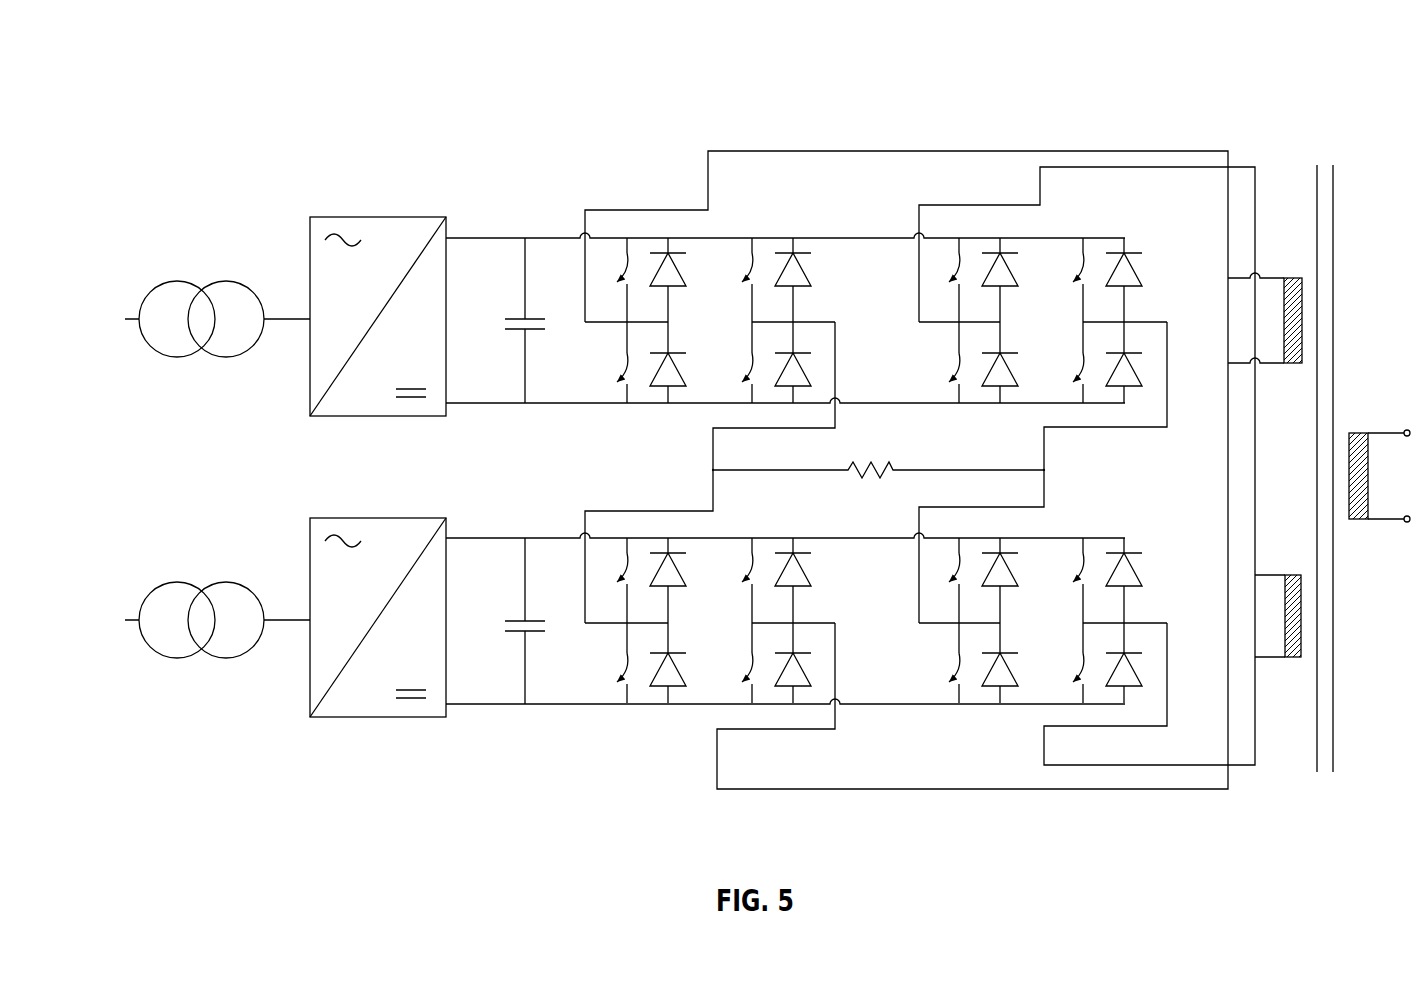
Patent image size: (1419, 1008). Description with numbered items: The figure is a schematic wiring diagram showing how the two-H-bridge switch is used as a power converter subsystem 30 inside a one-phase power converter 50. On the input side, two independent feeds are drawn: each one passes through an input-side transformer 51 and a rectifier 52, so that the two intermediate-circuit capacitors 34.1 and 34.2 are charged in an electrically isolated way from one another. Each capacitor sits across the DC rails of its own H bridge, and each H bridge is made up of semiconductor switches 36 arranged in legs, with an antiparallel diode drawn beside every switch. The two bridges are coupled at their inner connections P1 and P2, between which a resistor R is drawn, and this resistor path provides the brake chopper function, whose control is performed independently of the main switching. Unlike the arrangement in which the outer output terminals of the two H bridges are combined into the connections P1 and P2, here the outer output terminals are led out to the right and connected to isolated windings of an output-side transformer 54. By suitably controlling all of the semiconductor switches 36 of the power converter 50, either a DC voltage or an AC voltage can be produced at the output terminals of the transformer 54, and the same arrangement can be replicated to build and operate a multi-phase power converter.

The power converter subsystem 30 is at (850, 511).
The capacitor 34.1 is at (508, 320).
The capacitor 34.2 is at (508, 621).
The semiconductor switch 36 is at (1142, 297).
The one-phase power converter 50 is at (1319, 473).
The input-side transformer 51 is at (200, 233).
The rectifier 52 is at (380, 194).
The output-side transformer 54 is at (1326, 143).
The connection P1 is at (699, 471).
The connection P2 is at (1060, 471).
The resistor R is at (878, 485).